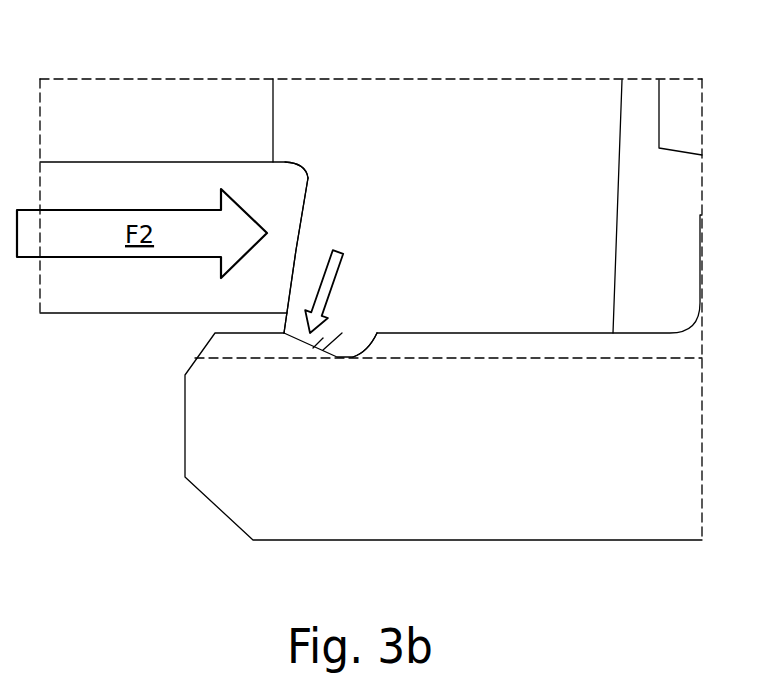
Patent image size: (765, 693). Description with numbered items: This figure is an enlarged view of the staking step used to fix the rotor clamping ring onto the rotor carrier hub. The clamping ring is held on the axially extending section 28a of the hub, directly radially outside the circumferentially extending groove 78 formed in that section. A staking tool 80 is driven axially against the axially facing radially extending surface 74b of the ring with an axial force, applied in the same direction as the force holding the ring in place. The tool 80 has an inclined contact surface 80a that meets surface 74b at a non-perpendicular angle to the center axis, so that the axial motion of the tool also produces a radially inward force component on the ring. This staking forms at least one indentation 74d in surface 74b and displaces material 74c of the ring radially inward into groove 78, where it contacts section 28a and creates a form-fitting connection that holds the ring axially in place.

The staking tool 80 is at (148, 183).
The inclined contact surface 80a is at (300, 253).
The axially facing radially extending surface 74b is at (274, 128).
The material 74c is at (308, 347).
The indentation 74d is at (310, 166).
The circumferentially extending groove 78 is at (367, 345).
The axially extending section 28a is at (518, 525).